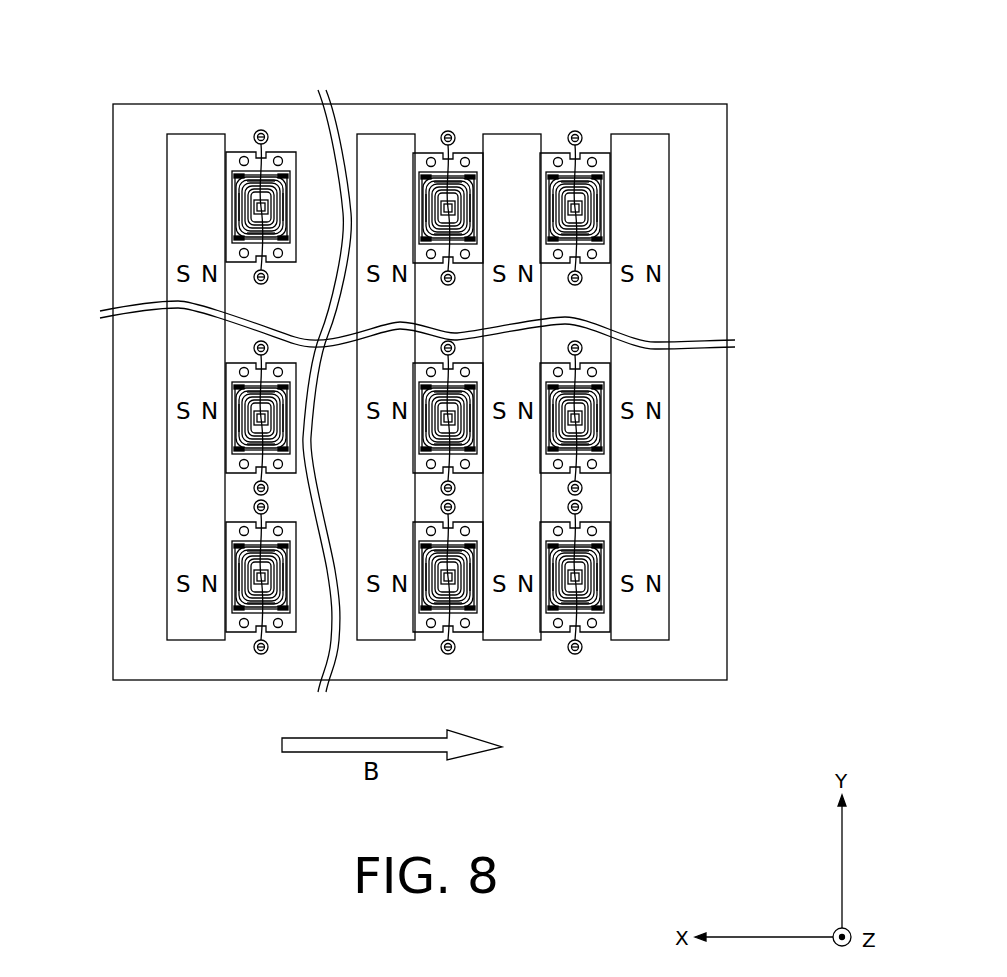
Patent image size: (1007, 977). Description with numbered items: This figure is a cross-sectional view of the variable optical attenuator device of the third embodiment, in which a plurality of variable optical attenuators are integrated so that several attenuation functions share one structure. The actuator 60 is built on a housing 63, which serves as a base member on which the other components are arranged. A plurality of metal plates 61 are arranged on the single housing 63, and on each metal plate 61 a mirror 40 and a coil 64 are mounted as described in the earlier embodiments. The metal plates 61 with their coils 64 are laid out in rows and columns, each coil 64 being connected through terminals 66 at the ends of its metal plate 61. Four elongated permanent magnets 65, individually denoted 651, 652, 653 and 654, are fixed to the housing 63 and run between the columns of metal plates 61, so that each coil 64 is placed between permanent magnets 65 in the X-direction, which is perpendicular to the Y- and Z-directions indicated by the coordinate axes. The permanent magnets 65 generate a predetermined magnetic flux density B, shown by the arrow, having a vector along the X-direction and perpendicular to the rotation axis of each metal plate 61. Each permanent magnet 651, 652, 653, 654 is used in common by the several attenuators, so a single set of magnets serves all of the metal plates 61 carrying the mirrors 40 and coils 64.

The actuator 60 is at (382, 376).
The housing 63 is at (128, 121).
The permanent magnets 65 is at (418, 338).
The permanent magnet 651 is at (200, 134).
The permanent magnet 652 is at (387, 135).
The permanent magnet 653 is at (515, 135).
The permanent magnet 654 is at (643, 135).
The metal plate 61 is at (261, 207).
The coil 64 is at (233, 238).
The mirror 40 is at (167, 211).
The terminals 66 is at (248, 391).